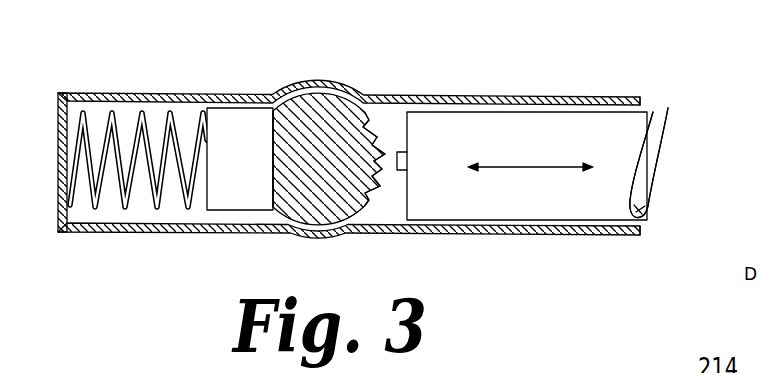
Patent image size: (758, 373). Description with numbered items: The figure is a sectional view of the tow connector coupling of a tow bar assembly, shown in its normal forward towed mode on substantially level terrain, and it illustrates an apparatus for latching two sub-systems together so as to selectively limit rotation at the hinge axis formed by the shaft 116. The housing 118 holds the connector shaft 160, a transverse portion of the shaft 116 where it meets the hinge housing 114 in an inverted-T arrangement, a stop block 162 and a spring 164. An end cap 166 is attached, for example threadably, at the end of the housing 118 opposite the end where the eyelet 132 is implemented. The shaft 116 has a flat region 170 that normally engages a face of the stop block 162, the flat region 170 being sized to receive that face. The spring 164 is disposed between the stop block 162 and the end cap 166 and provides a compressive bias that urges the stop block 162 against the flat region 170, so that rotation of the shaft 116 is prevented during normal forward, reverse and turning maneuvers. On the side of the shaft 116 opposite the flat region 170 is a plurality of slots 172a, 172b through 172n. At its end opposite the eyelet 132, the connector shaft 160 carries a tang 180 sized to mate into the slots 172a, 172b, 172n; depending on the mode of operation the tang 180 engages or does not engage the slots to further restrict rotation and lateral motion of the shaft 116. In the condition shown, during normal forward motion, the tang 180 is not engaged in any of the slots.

The hinge housing 114 is at (322, 80).
The shaft 116 is at (318, 212).
The housing 118 is at (575, 97).
The eyelet 132 is at (686, 163).
The connector shaft 160 is at (650, 113).
The stop block 162 is at (237, 198).
The spring 164 is at (123, 206).
The end cap 166 is at (62, 142).
The flat region 170 is at (273, 128).
The slot 172a is at (373, 122).
The slot 172b is at (381, 156).
The slot 172n is at (372, 190).
The tang 180 is at (329, 159).